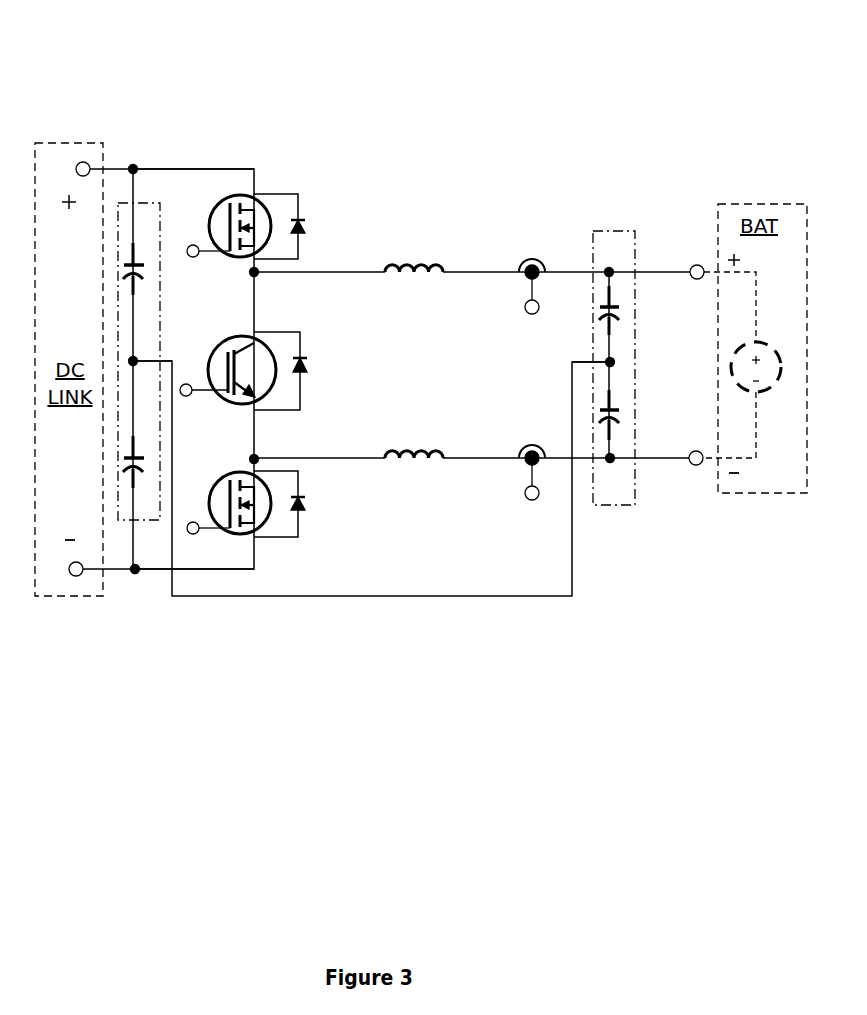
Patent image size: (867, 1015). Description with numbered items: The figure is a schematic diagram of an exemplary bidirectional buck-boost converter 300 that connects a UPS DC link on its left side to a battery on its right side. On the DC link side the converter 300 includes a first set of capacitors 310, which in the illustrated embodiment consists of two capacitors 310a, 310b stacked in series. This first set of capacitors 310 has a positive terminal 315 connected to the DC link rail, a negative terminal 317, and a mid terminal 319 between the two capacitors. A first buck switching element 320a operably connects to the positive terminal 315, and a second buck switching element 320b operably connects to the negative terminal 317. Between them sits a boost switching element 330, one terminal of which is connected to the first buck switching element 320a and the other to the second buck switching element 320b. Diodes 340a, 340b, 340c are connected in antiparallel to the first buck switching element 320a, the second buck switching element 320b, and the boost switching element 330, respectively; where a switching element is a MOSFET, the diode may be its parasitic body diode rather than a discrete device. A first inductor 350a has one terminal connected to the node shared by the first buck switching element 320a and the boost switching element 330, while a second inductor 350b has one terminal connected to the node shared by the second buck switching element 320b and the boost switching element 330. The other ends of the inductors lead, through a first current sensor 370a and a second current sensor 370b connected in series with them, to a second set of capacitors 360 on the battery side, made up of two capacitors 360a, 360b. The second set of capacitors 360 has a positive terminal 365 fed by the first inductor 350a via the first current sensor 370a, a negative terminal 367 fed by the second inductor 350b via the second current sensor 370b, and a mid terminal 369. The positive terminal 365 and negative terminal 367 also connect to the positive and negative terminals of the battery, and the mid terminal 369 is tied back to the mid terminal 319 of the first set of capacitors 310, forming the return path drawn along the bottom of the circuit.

The bidirectional buck-boost converter 300 is at (406, 96).
The first set of capacitors 310 is at (134, 207).
The capacitor 310a is at (148, 275).
The capacitor 310b is at (148, 465).
The positive terminal 315 is at (135, 187).
The negative terminal 317 is at (136, 547).
The mid terminal 319 is at (172, 361).
The first buck switching element 320a is at (209, 241).
The second buck switching element 320b is at (218, 537).
The boost switching element 330 is at (227, 406).
The diode 340a is at (311, 226).
The diode 340b is at (307, 504).
The diode 340c is at (306, 371).
The first inductor 350a is at (408, 256).
The second inductor 350b is at (408, 439).
The second set of capacitors 360 is at (615, 230).
The capacitor 360a is at (617, 312).
The capacitor 360b is at (617, 416).
The positive terminal 365 is at (612, 279).
The negative terminal 367 is at (612, 449).
The mid terminal 369 is at (612, 368).
The first current sensor 370a is at (532, 270).
The second current sensor 370b is at (530, 453).